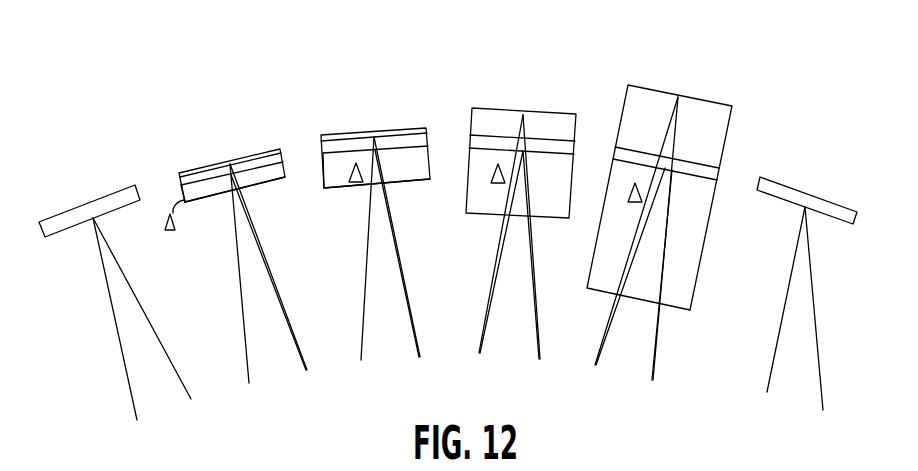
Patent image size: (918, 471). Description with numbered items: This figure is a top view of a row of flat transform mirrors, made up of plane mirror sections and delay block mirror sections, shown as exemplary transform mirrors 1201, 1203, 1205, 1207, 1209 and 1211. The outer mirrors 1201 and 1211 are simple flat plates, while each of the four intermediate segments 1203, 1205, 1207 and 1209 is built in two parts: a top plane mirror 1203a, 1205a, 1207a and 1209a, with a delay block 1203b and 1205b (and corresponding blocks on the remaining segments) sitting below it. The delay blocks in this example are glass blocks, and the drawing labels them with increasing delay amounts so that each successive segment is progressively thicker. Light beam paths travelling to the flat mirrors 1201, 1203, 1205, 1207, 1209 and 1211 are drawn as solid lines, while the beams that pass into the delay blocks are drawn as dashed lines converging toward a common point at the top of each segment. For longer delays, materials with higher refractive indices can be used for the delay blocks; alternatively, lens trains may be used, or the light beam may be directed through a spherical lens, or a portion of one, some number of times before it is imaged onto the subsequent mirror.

The transform mirror 1201 is at (92, 178).
The transform mirror segment 1203 is at (223, 208).
The top plane mirror 1203a is at (217, 135).
The delay block 1203b is at (215, 200).
The transform mirror segment 1205 is at (366, 189).
The top plane mirror 1205a is at (353, 136).
The delay block 1205b is at (330, 190).
The transform mirror segment 1207 is at (520, 188).
The top plane mirror 1207a is at (498, 40).
The transform mirror segment 1209 is at (674, 197).
The top plane mirror 1209a is at (698, 98).
The transform mirror 1211 is at (852, 165).